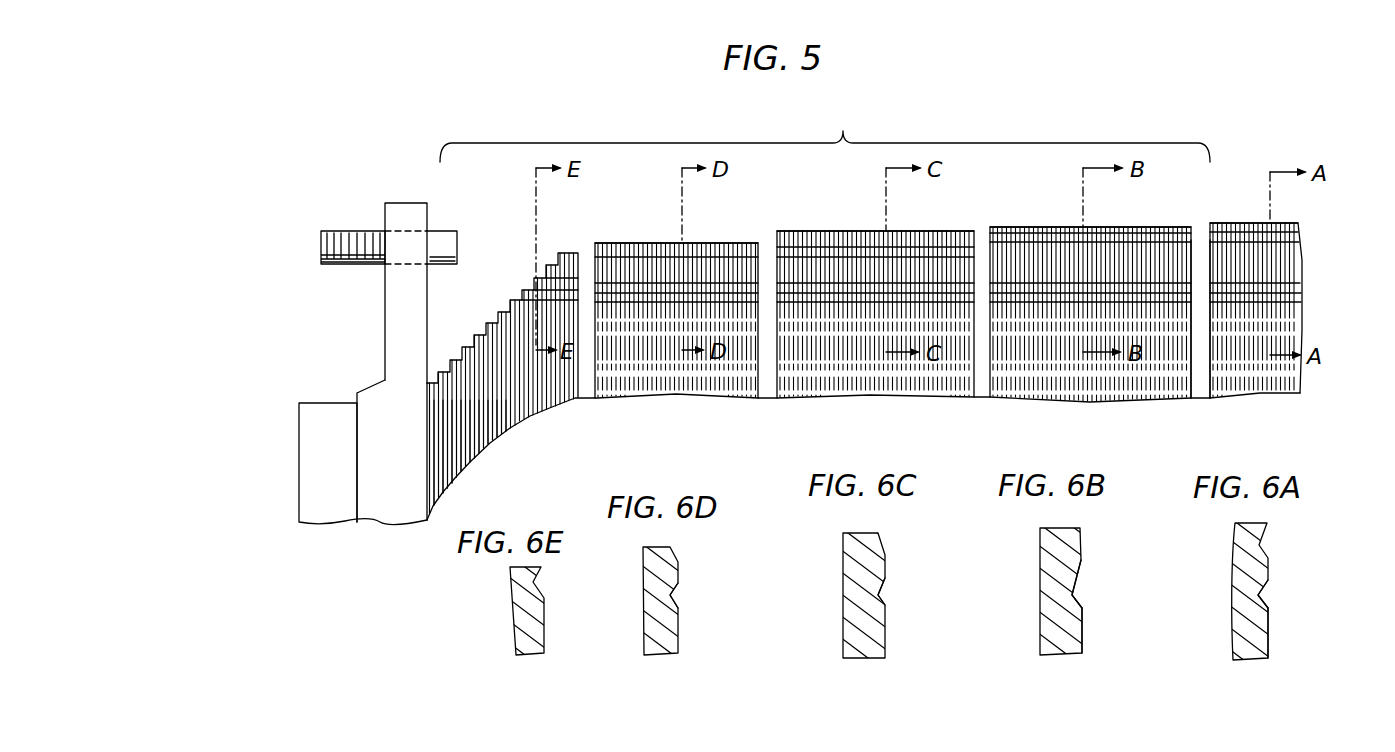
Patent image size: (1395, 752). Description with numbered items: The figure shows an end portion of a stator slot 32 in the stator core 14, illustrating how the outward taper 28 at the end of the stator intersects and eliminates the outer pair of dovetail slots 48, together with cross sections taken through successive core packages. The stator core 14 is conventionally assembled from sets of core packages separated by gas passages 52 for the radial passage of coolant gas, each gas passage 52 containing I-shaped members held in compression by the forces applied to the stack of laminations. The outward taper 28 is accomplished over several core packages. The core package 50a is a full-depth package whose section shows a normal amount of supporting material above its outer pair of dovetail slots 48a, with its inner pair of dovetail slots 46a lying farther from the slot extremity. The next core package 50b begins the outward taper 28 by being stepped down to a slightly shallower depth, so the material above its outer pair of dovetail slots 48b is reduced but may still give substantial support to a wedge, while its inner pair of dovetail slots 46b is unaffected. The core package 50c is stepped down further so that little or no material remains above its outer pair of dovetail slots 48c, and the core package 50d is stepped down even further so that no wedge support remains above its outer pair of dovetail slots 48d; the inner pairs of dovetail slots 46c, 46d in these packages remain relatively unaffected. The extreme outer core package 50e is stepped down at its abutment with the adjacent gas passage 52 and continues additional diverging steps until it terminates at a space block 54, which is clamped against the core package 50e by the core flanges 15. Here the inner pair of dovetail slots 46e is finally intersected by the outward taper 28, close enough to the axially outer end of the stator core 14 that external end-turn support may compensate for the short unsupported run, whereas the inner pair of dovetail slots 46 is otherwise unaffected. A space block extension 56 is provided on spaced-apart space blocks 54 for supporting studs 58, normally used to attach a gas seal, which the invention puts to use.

In FIG. 5, the stator core 14 is at (849, 220).
In FIG. 5, the core flanges 15 is at (318, 458).
In FIG. 5, the outward taper 28 is at (825, 132).
In FIG. 5, the stator slot 32 is at (718, 440).
In FIG. 5, the inner pair of dovetail slots 46 is at (1292, 290).
In FIG. 5, the outer pair of dovetail slots 48 is at (1287, 238).
In FIG. 5, the core package 50a is at (1290, 327).
In FIG. 6A, the core package 50a is at (1270, 631).
In FIG. 5, the core package 50b is at (1123, 387).
In FIG. 6B, the core package 50b is at (1083, 633).
In FIG. 5, the core package 50c is at (915, 383).
In FIG. 5, the core package 50d is at (743, 387).
In FIG. 5, the core package 50e is at (545, 398).
In FIG. 5, the gas passage 52 is at (1196, 245).
In FIG. 5, the space block 54 is at (375, 405).
In FIG. 5, the space block extension 56 is at (410, 207).
In FIG. 5, the stud 58 is at (338, 258).
In FIG. 6A, the inner pair of dovetail slots 46a is at (1262, 585).
In FIG. 6B, the inner pair of dovetail slots 46b is at (1075, 598).
In FIG. 6C, the inner pair of dovetail slots 46c is at (880, 593).
In FIG. 6D, the inner pair of dovetail slots 46d is at (674, 598).
In FIG. 6E, the inner pair of dovetail slots 46e is at (540, 580).
In FIG. 6A, the outer pair of dovetail slots 48a is at (1267, 540).
In FIG. 6B, the outer pair of dovetail slots 48b is at (1072, 543).
In FIG. 6C, the outer pair of dovetail slots 48c is at (880, 538).
In FIG. 6D, the outer pair of dovetail slots 48d is at (674, 553).